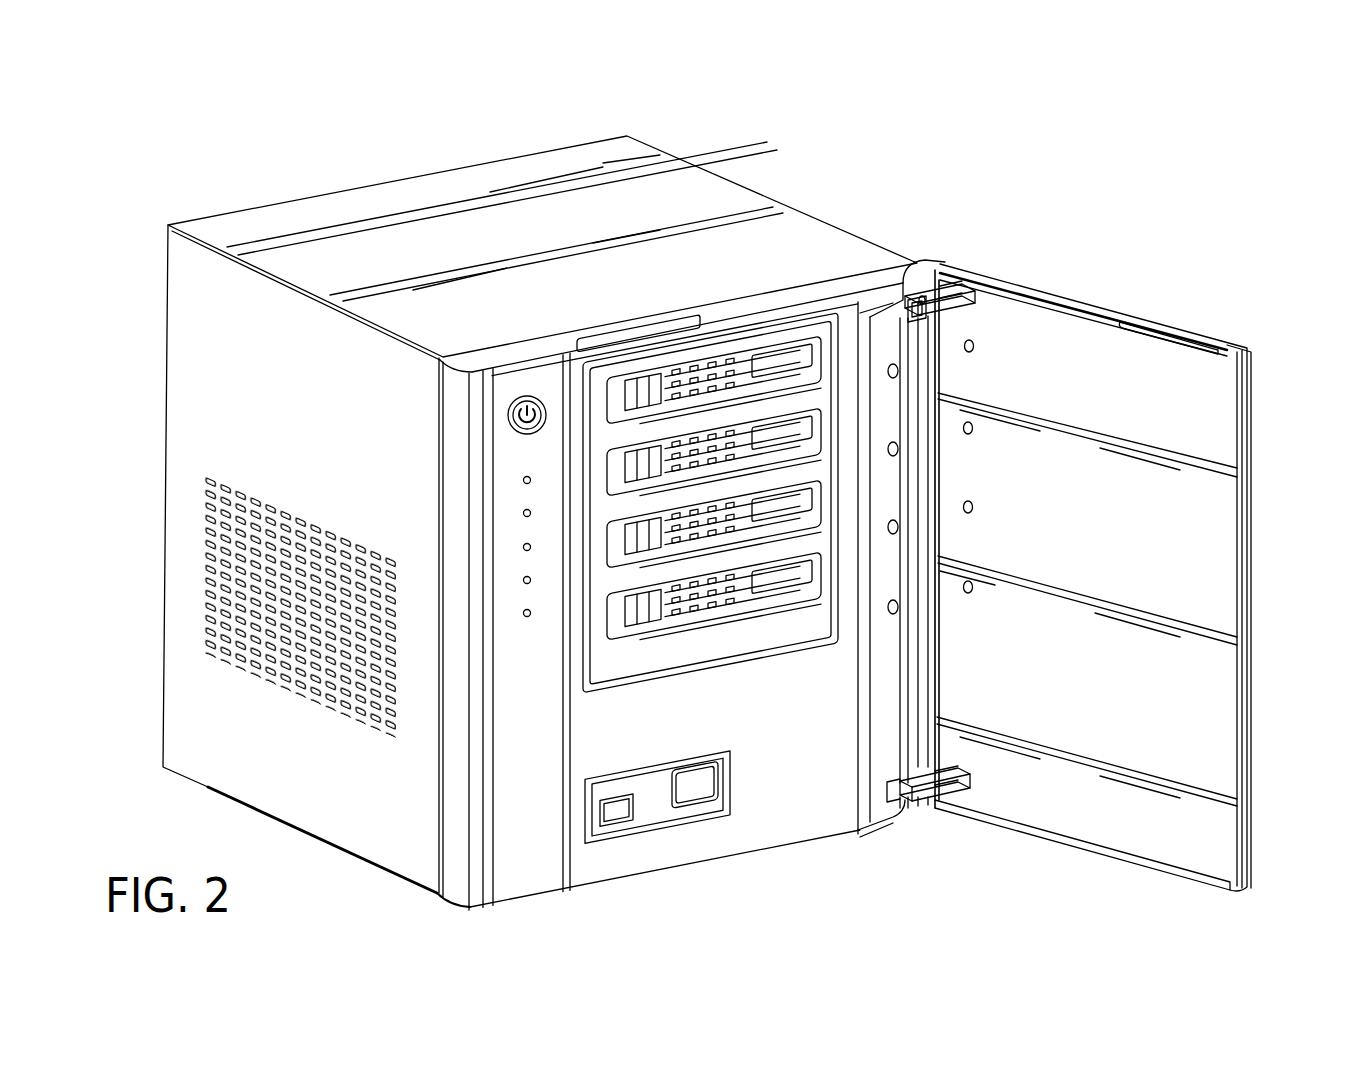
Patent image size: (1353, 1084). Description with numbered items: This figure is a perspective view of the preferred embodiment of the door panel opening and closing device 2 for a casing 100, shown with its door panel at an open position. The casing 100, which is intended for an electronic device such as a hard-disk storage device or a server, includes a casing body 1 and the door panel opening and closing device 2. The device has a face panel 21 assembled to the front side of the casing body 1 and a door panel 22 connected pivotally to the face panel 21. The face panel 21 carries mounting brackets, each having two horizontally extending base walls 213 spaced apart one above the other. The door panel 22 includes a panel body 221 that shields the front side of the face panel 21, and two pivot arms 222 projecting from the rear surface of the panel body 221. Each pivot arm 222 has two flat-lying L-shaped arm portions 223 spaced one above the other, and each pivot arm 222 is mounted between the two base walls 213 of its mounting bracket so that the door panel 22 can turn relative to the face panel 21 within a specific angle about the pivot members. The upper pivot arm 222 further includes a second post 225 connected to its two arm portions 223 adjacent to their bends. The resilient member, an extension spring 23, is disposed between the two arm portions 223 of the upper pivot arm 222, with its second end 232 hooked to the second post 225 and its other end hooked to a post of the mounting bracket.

The casing 100 is at (815, 185).
The casing body 1 is at (700, 197).
The door panel opening and closing device 2 is at (1205, 316).
The face panel 21 is at (740, 313).
The door panel 22 is at (1143, 308).
The extension spring 23 is at (920, 316).
The base wall 213 is at (890, 330).
The panel body 221 is at (1090, 343).
The pivot arm 222 is at (962, 292).
The arm portion 223 is at (965, 326).
The second post 225 is at (922, 300).
The second end 232 is at (921, 316).